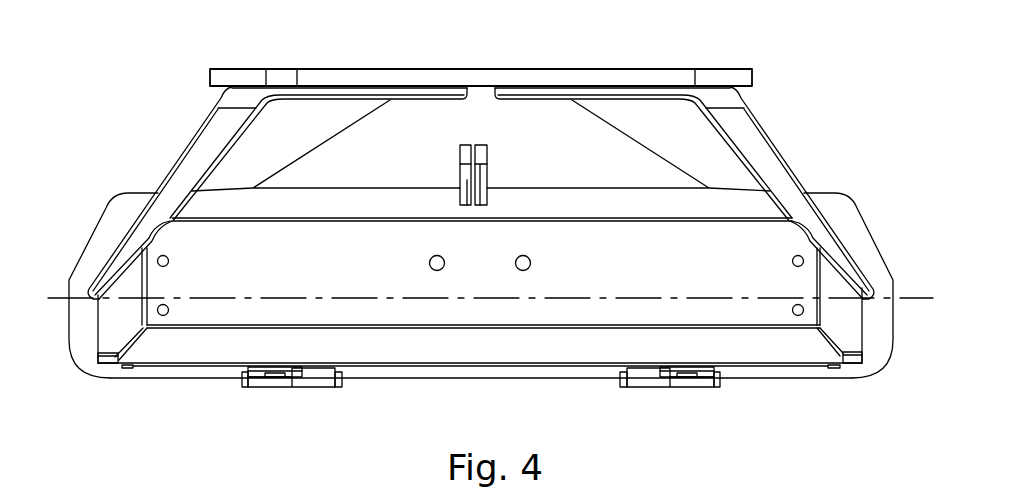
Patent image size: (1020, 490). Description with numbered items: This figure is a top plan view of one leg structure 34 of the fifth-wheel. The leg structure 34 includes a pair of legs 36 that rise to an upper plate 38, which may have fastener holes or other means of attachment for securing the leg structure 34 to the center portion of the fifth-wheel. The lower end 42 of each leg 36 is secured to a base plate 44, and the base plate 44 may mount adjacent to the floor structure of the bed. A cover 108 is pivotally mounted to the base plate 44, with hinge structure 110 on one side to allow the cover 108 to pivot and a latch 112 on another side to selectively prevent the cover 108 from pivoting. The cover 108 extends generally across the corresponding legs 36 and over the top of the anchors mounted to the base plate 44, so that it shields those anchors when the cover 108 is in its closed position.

The leg structure 34 is at (476, 239).
The legs 36 is at (175, 157).
The upper plate 38 is at (210, 79).
The lower end 42 is at (113, 242).
The base plate 44 is at (862, 218).
The cover 108 is at (190, 367).
The hinge structure 110 is at (695, 385).
The latch 112 is at (483, 146).